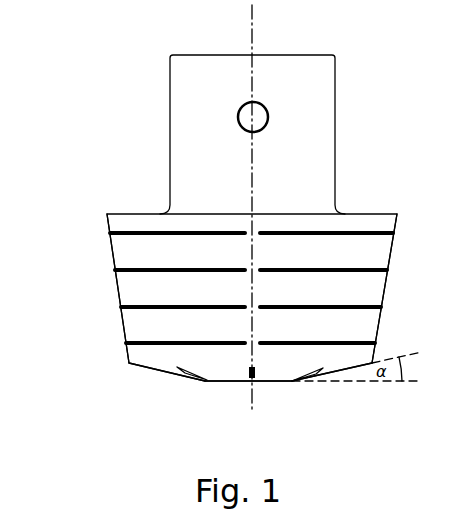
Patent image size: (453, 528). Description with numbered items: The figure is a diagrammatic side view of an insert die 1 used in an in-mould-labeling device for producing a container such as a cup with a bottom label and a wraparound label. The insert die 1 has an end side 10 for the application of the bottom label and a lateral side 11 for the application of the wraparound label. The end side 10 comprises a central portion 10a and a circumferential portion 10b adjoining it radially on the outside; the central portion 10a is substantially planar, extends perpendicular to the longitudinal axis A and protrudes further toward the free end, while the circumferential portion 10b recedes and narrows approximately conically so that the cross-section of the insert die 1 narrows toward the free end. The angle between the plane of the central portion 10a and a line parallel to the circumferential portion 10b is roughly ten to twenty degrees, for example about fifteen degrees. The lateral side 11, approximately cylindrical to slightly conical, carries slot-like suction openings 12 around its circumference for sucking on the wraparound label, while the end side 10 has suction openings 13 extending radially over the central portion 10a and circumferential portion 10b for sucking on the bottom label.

The insert die 1 is at (158, 403).
The end side 10 is at (291, 387).
The central portion 10a is at (270, 383).
The circumferential portion 10b is at (158, 373).
The lateral side 11 is at (118, 288).
The suction openings 12 is at (153, 310).
The suction openings 13 is at (183, 374).
The longitudinal axis A is at (253, 18).